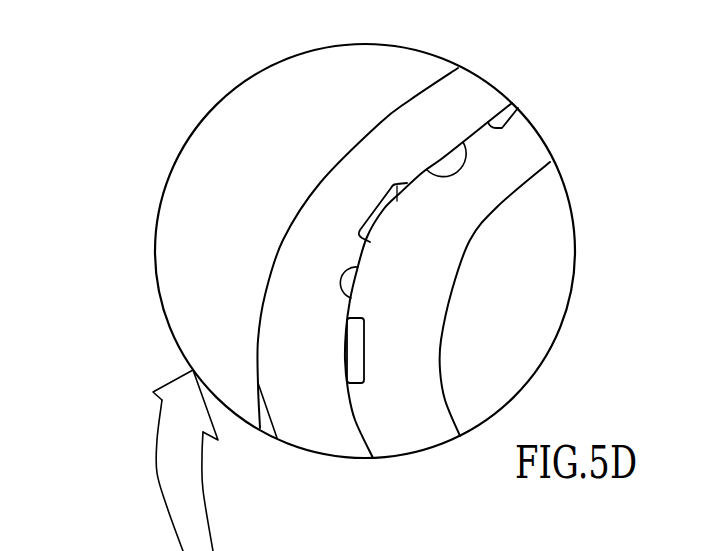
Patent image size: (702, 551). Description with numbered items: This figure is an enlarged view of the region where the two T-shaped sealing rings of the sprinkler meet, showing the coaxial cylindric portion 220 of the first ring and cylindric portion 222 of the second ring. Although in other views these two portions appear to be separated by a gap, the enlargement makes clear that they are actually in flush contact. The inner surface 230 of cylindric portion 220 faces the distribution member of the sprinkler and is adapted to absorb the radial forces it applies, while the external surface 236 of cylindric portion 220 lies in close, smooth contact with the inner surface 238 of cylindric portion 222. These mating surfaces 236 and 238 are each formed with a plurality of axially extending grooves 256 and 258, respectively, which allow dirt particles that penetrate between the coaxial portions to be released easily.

The cylindric portion 220 is at (513, 157).
The cylindric portion 222 is at (463, 97).
The inner surface 230 is at (470, 240).
The external surface 236 is at (359, 267).
The inner surface 238 is at (427, 170).
The axially extending grooves 256 is at (353, 355).
The axially extending grooves 258 is at (376, 212).